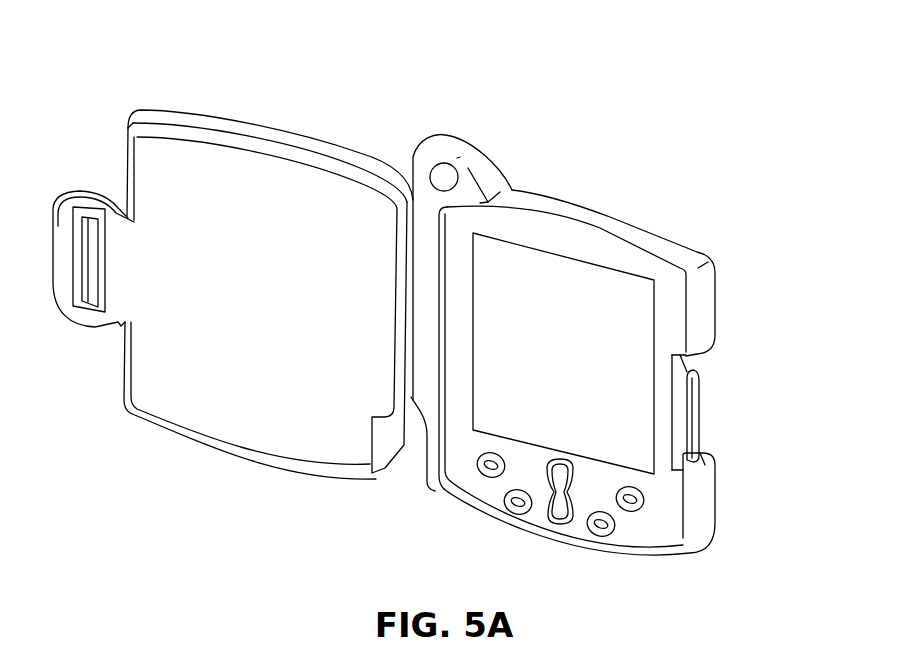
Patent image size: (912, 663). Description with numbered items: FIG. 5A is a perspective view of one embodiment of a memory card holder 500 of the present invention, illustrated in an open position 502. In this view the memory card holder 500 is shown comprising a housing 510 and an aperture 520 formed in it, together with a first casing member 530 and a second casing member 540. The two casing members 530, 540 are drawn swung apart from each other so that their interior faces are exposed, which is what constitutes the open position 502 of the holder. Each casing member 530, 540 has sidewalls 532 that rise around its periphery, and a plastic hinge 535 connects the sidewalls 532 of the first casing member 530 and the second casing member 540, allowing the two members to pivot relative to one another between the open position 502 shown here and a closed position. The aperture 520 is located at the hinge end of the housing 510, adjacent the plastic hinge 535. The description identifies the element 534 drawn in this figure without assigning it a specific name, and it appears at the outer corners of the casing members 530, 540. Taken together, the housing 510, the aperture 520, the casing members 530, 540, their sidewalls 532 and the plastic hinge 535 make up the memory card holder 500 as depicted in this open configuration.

The memory card holder 500 is at (92, 95).
The open position 502 is at (552, 86).
The housing 510 is at (745, 275).
The aperture 520 is at (447, 173).
The first casing member 530 is at (523, 275).
The sidewalls 532 is at (278, 140).
The corner retention member 534 is at (138, 377).
The plastic hinge 535 is at (427, 435).
The second casing member 540 is at (217, 178).